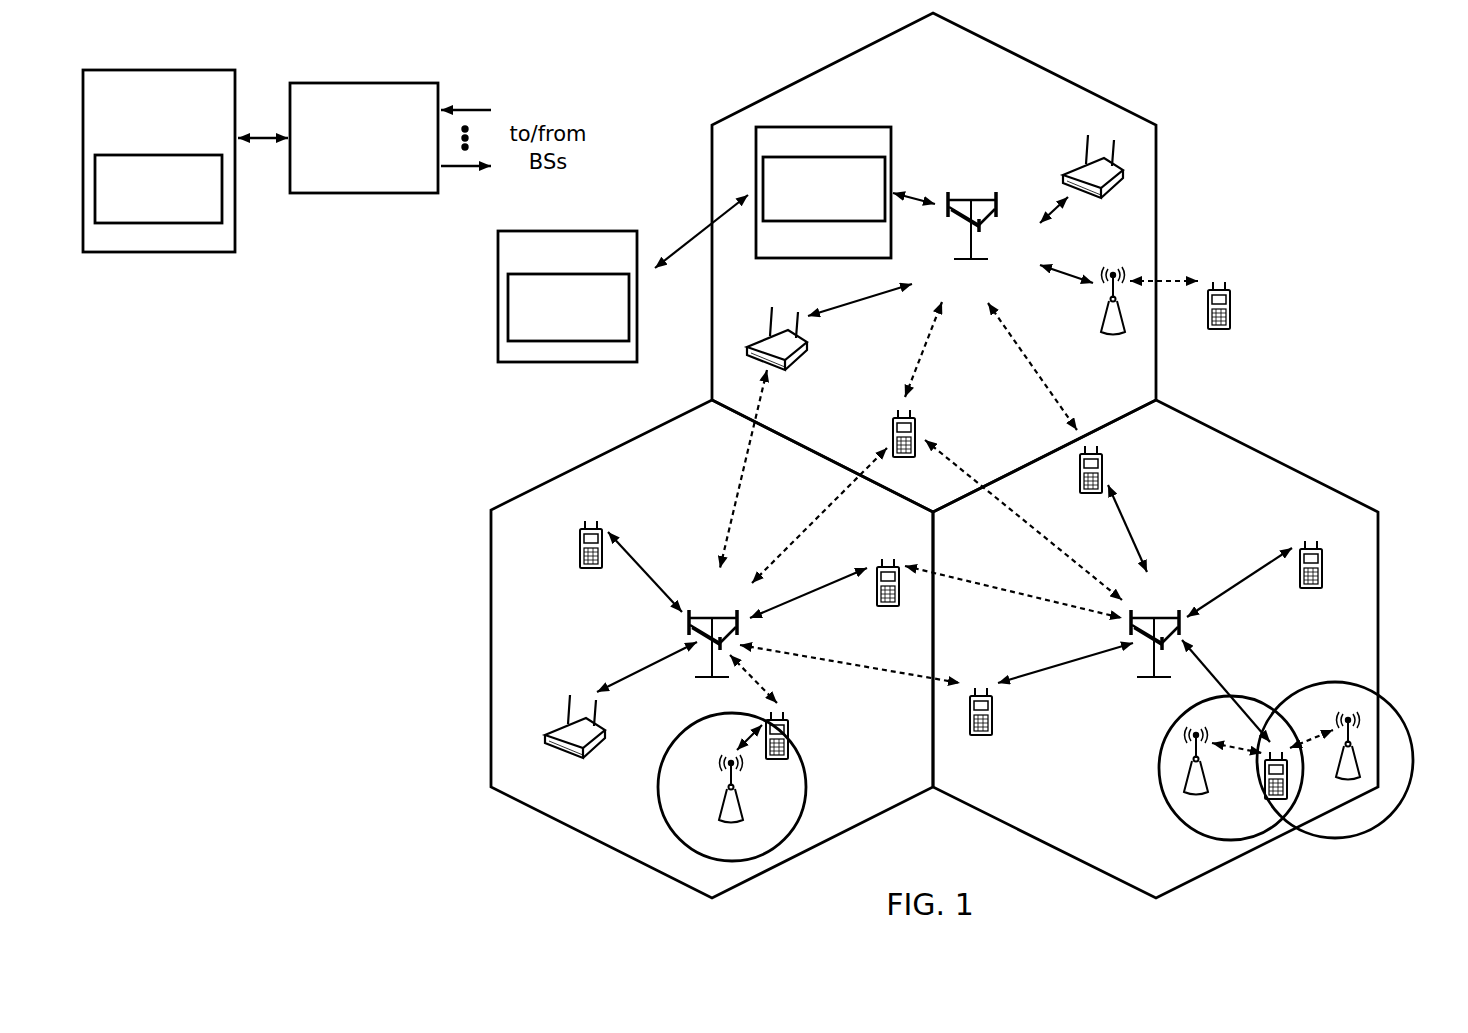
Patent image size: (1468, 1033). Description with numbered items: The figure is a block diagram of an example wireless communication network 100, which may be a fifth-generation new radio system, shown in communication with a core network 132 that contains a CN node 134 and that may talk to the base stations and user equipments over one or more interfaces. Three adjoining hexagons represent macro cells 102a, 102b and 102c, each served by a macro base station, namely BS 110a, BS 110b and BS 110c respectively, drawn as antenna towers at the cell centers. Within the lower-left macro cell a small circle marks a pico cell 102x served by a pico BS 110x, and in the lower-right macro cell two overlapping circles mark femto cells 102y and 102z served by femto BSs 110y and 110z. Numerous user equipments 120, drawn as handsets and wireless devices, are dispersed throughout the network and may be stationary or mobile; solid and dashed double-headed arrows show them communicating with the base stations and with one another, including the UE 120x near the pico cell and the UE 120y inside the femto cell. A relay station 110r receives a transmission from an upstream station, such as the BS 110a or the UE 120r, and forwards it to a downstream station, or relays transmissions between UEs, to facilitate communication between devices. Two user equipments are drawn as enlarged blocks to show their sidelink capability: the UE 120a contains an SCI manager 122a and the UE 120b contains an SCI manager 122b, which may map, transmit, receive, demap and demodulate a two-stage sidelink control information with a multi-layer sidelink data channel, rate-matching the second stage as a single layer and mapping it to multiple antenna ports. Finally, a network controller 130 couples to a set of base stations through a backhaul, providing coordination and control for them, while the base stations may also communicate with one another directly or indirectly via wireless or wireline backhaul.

The wireless communication network 100 is at (1305, 85).
The macro cell 102a is at (1047, 72).
The macro cell 102b is at (602, 455).
The macro cell 102c is at (1268, 455).
The pico cell 102x is at (680, 733).
The femto cell 102y is at (1167, 740).
The femto cell 102z is at (1323, 675).
The macro BS 110a is at (968, 203).
The macro BS 110b is at (709, 616).
The macro BS 110c is at (1152, 616).
The relay station 110r is at (1103, 315).
The pico BS 110x is at (742, 812).
The femto BS 110y is at (1204, 788).
The femto BS 110z is at (1357, 773).
The user equipment 120 is at (1100, 160).
The UE 120a is at (878, 127).
The UE 120b is at (632, 232).
The UE 120r is at (1230, 323).
The UE 120x is at (788, 732).
The UE 120y is at (1265, 790).
The SCI manager 122a is at (790, 258).
The SCI manager 122b is at (508, 325).
The network controller 130 is at (360, 83).
The core network 132 is at (171, 70).
The CN node 134 is at (222, 175).